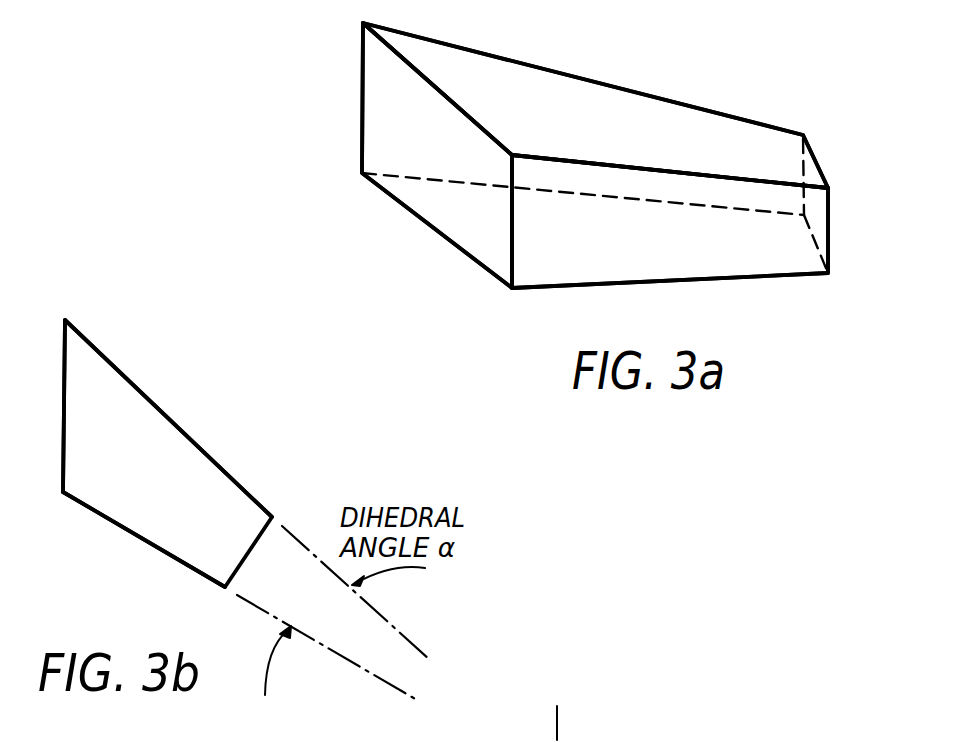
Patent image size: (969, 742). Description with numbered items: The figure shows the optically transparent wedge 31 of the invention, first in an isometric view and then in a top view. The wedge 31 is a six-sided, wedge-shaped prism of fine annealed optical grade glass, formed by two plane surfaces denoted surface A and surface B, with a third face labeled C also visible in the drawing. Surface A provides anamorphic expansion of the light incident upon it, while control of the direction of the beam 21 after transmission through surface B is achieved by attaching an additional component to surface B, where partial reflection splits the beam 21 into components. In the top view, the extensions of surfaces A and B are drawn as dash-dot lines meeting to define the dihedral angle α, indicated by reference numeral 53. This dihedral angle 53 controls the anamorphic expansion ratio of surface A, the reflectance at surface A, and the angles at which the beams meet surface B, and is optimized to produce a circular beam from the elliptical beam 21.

In FIG. 3a, the wedge 31 is at (866, 341).
In FIG. 3b, the wedge 31 is at (61, 555).
In FIG. 3b, the dihedral angle α 53 is at (365, 632).
In FIG. 3b, the beam 21 is at (559, 734).
In FIG. 3a, the surface A is at (653, 258).
In FIG. 3b, the surface A is at (138, 541).
In FIG. 3a, the surface B is at (505, 90).
In FIG. 3b, the surface B is at (183, 428).
In FIG. 3a, the face C is at (440, 202).
In FIG. 3b, the face C is at (63, 365).